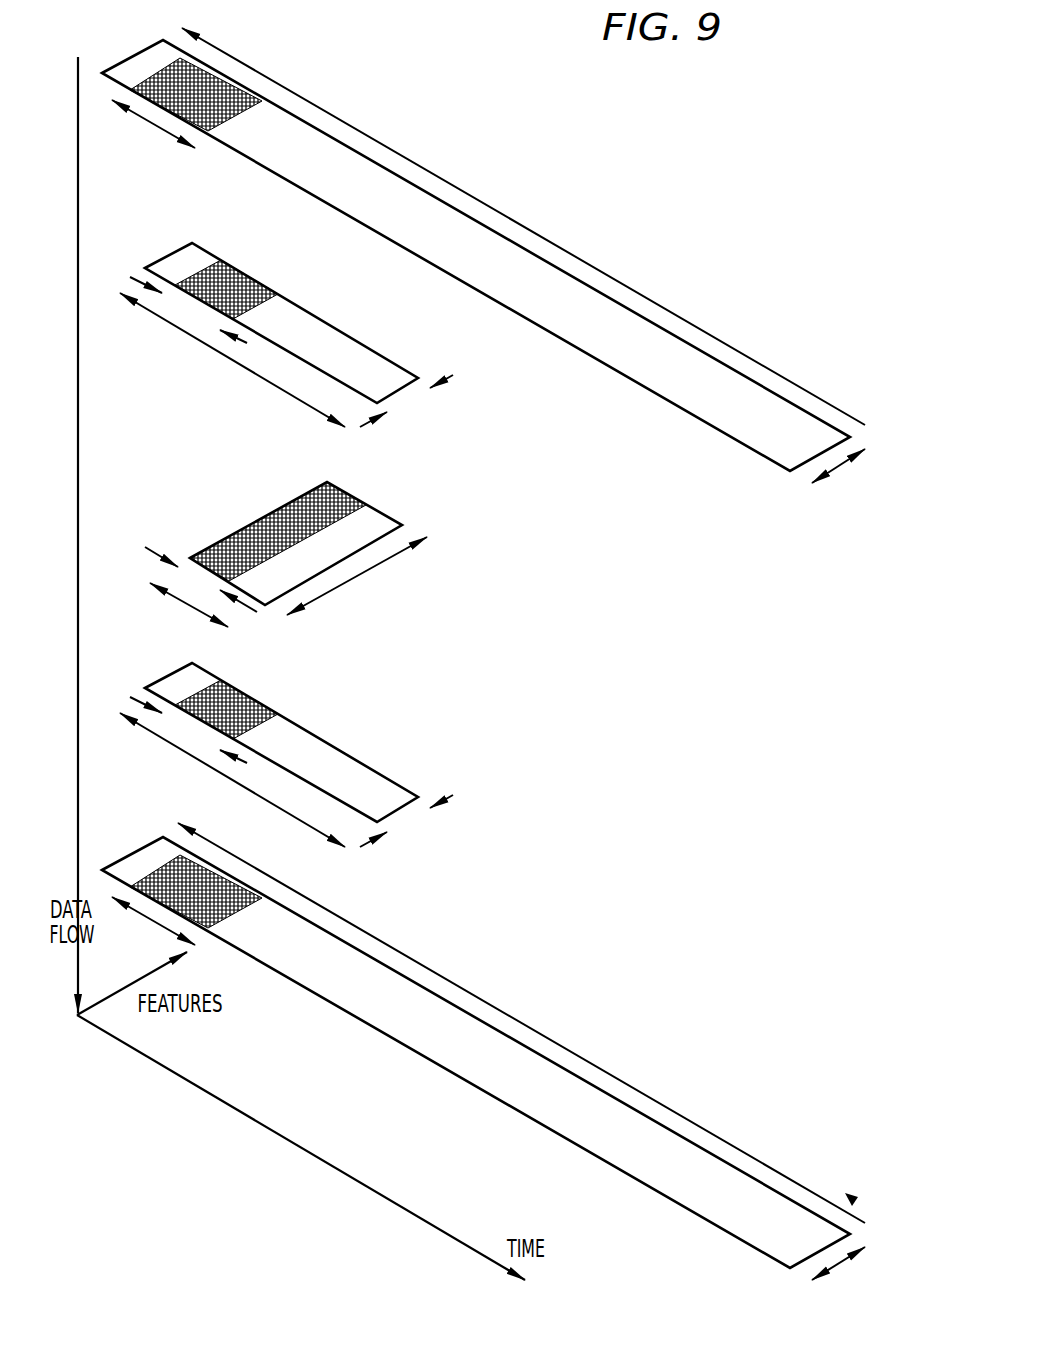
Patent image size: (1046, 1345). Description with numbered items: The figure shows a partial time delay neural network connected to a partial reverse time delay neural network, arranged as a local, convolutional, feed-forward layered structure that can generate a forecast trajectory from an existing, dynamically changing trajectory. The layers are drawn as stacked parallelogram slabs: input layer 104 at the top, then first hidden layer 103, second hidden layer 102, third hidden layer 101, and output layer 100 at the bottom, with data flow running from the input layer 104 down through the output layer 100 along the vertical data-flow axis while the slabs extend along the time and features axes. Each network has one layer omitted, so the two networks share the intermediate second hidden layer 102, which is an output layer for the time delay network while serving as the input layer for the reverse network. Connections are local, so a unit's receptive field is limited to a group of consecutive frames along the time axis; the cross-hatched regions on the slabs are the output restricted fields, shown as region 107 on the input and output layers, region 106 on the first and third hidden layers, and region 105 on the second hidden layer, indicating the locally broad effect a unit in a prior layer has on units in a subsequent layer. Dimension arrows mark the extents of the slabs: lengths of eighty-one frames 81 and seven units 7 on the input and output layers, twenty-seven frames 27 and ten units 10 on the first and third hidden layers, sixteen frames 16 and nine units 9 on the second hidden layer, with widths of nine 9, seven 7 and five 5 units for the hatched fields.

The output layer 100 is at (607, 1058).
The third hidden layer 101 is at (395, 763).
The second hidden layer 102 is at (462, 628).
The first hidden layer 103 is at (523, 445).
The input layer 104 is at (608, 263).
The receptive field of second hidden layer 105 is at (248, 524).
The receptive field of first/third hidden layer 106 is at (243, 278).
The receptive field of input/output layer 107 is at (155, 73).
The time dimension (81 frames) 81 is at (521, 625).
The feature dimension 9 is at (170, 526).
The dimension 7 is at (497, 785).
The time dimension 27 is at (232, 570).
The feature dimension 10 is at (406, 611).
The time dimension 16 is at (357, 576).
The dimension 5 is at (201, 579).